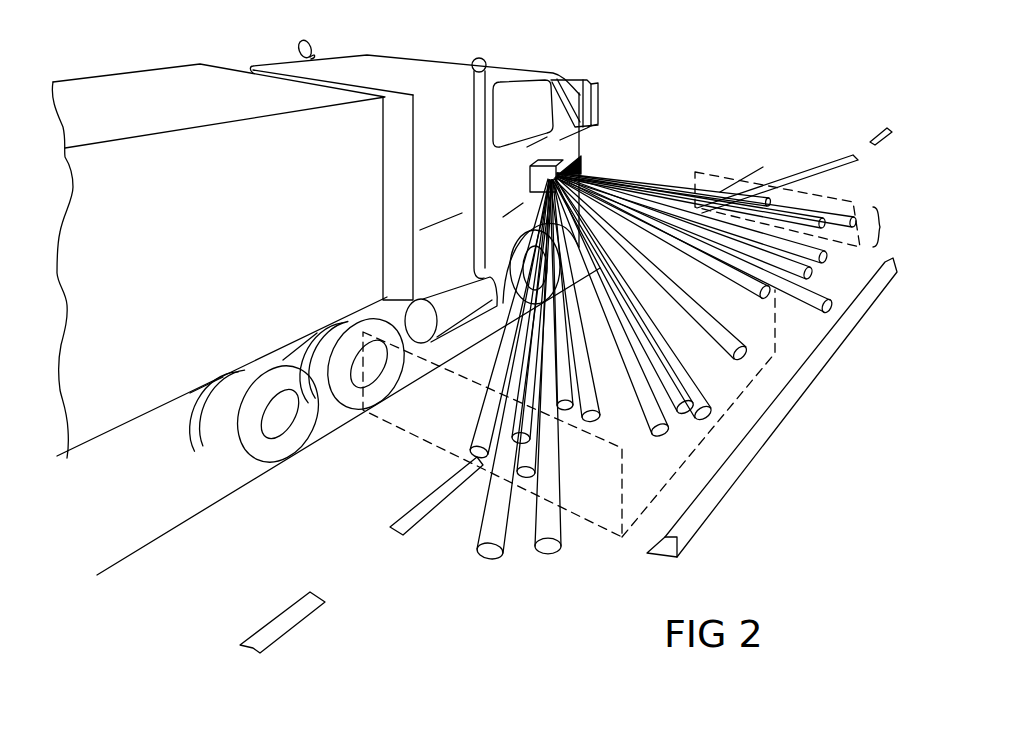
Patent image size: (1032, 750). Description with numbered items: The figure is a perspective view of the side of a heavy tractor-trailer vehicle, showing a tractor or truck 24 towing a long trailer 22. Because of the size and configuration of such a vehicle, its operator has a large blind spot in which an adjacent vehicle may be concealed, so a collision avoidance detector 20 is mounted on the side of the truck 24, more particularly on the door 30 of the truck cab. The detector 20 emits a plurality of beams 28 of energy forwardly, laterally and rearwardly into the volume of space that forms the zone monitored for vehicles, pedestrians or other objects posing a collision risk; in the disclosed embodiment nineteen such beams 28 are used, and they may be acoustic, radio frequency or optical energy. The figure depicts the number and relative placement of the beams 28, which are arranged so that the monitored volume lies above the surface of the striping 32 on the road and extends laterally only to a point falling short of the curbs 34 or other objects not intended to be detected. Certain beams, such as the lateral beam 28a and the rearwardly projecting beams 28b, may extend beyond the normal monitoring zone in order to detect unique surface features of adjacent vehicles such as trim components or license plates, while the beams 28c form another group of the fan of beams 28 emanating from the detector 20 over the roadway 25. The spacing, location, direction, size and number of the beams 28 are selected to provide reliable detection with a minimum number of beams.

The collision avoidance detector 20 is at (580, 160).
The trailer 22 is at (262, 231).
The tractor or truck 24 is at (448, 68).
The roadway 25 is at (308, 532).
The beams of energy 28 is at (793, 208).
The lateral beam 28a is at (827, 310).
The rearwardly projecting beams 28b is at (503, 553).
The middle sensor beams 28c is at (560, 423).
The door 30 is at (560, 83).
The striping 32 is at (413, 513).
The curbs 34 is at (693, 527).